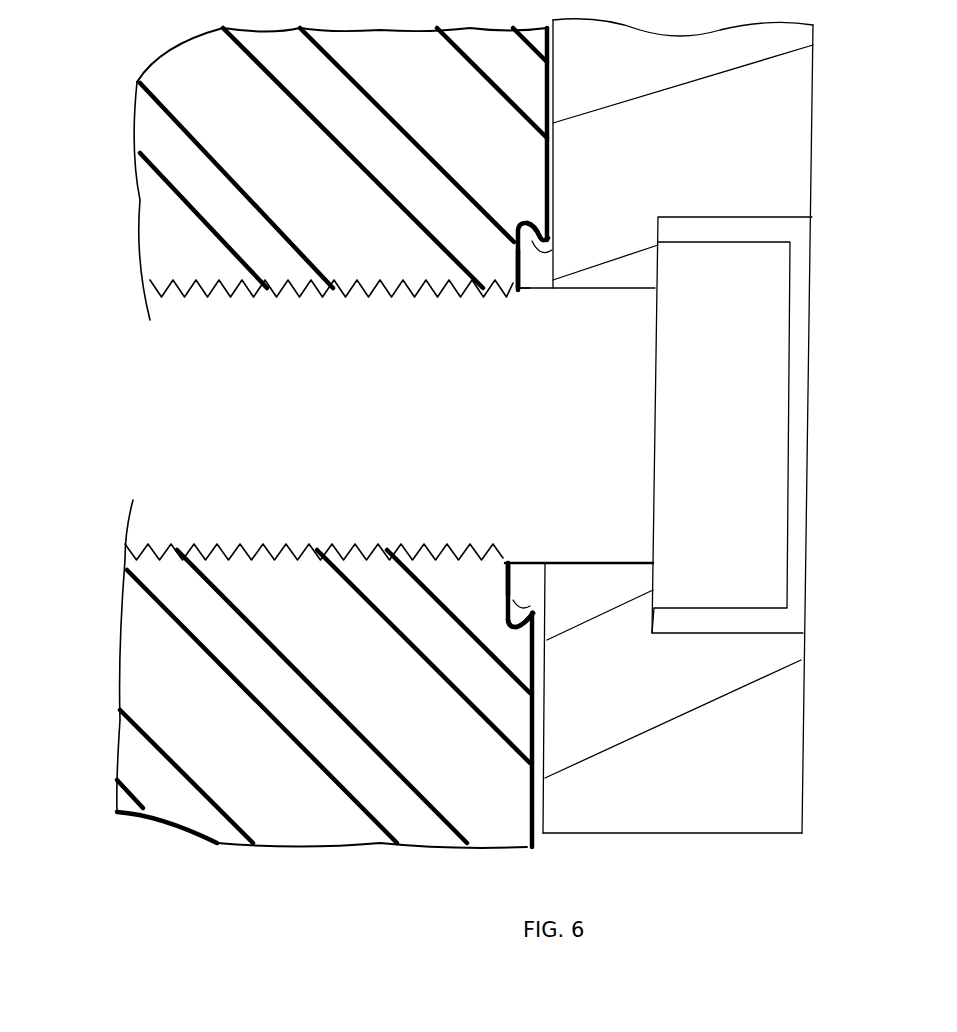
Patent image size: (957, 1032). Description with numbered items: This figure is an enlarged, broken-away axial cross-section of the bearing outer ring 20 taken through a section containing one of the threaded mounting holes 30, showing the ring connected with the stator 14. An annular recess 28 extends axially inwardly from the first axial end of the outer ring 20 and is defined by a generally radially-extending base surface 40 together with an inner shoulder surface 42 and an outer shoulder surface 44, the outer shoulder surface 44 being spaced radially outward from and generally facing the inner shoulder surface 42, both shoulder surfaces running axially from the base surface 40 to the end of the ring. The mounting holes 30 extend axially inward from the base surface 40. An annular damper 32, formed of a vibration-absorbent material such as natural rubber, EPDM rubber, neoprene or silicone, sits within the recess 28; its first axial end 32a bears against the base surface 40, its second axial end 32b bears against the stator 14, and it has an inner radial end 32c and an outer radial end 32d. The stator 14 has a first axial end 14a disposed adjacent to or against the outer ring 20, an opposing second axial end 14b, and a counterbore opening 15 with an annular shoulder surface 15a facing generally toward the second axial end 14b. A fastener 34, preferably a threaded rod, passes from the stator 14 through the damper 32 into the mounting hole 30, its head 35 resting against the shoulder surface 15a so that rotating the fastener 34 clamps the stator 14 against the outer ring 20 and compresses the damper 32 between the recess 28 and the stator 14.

The stator 14 is at (693, 426).
The first axial end of the stator 14a is at (547, 132).
The second axial end of the stator 14b is at (817, 120).
The counterbore opening 15 is at (760, 450).
The annular shoulder surface 15a is at (660, 590).
The bearing outer ring 20 is at (148, 91).
The annular recess 28 is at (536, 575).
The threaded mounting hole 30 is at (320, 288).
The annular damper 32 is at (541, 265).
The first axial end of the damper 32a is at (513, 267).
The second axial end of the damper 32b is at (547, 590).
The inner radial end of the damper 32c is at (547, 637).
The outer radial end of the damper 32d is at (550, 233).
The fastener 34 is at (300, 527).
The head 35 is at (760, 402).
The base surface 40 is at (520, 278).
The inner shoulder surface 42 is at (510, 603).
The outer shoulder surface 44 is at (553, 247).